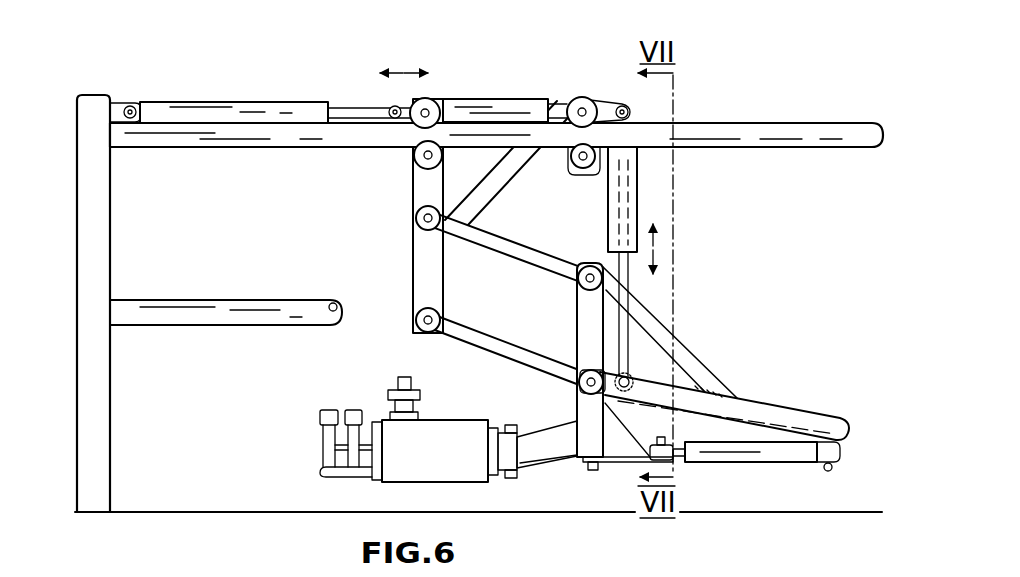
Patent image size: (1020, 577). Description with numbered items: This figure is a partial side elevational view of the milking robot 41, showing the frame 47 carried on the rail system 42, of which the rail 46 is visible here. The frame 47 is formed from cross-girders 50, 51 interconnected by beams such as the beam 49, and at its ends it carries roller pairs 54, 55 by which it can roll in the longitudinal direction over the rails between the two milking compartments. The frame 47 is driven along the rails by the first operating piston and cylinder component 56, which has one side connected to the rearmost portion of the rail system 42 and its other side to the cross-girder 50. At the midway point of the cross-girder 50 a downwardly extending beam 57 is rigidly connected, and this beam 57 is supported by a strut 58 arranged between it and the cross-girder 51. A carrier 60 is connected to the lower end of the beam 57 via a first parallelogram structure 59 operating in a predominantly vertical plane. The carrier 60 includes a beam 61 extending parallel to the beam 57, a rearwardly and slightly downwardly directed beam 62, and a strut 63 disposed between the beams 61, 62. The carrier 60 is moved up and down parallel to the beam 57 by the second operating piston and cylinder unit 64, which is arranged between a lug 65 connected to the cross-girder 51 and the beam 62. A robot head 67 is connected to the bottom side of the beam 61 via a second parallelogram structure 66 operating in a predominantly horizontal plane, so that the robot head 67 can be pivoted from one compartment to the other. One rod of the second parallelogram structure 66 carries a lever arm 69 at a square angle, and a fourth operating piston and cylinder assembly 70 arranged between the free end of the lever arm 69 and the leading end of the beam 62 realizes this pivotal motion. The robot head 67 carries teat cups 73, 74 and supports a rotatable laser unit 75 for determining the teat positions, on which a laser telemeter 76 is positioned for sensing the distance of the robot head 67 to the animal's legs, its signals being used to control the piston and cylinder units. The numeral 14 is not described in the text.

The lifting apparatus 14 is at (805, 302).
The milking robot 41 is at (494, 401).
The rail system 42 is at (114, 253).
The rail 46 is at (828, 123).
The frame 47 is at (495, 100).
The beam 49 is at (531, 102).
The cross-girder 50 is at (437, 102).
The cross-girder 51 is at (593, 97).
The roller pair 54 is at (577, 126).
The roller pair 55 is at (414, 157).
The first operating piston and cylinder component 56 is at (234, 106).
The downwardly extending beam 57 is at (412, 262).
The strut 58 is at (492, 187).
The first parallelogram structure 59 is at (477, 328).
The carrier 60 is at (582, 305).
The beam 61 is at (585, 325).
The rearwardly and slightly downwardly directed beam 62 is at (795, 405).
The strut 63 is at (688, 345).
The second operating piston and cylinder unit 64 is at (628, 193).
The lug 65 is at (627, 105).
The second parallelogram structure 66 is at (548, 445).
The robot head 67 is at (458, 470).
The lever arm 69 is at (623, 466).
The fourth operating piston and cylinder assembly 70 is at (798, 456).
The teat cup 73 is at (318, 424).
The teat cup 74 is at (353, 410).
The laser unit 75 is at (420, 400).
The laser telemeter 76 is at (405, 375).